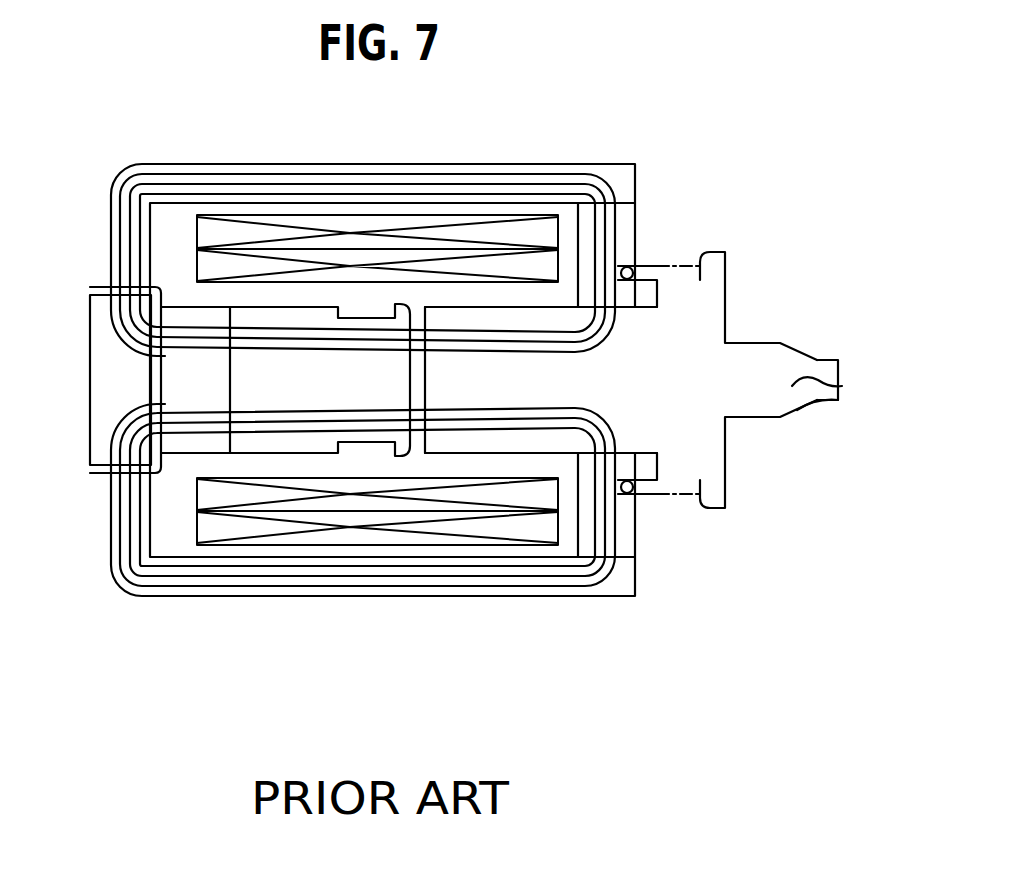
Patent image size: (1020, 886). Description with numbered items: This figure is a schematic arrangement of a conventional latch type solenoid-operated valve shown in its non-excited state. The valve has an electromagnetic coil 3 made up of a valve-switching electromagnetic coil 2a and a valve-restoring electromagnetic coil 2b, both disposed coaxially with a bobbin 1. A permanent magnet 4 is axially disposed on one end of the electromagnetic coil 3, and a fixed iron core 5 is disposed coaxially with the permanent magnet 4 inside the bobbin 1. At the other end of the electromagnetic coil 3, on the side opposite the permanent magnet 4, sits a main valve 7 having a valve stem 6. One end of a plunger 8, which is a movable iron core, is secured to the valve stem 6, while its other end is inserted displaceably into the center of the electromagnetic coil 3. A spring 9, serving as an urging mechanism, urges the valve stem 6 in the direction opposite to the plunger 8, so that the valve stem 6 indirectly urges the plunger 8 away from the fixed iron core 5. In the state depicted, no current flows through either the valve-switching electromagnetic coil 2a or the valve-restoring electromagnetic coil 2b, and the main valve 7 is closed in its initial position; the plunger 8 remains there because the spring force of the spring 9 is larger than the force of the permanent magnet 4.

The bobbin 1 is at (243, 292).
The valve-switching electromagnetic coil 2a is at (365, 275).
The valve-restoring electromagnetic coil 2b is at (495, 232).
The electromagnetic coil 3 is at (330, 513).
The permanent magnet 4 is at (185, 398).
The fixed iron core 5 is at (263, 398).
The valve stem 6 is at (842, 388).
The main valve 7 is at (752, 335).
The plunger 8 is at (500, 398).
The spring 9 is at (690, 268).